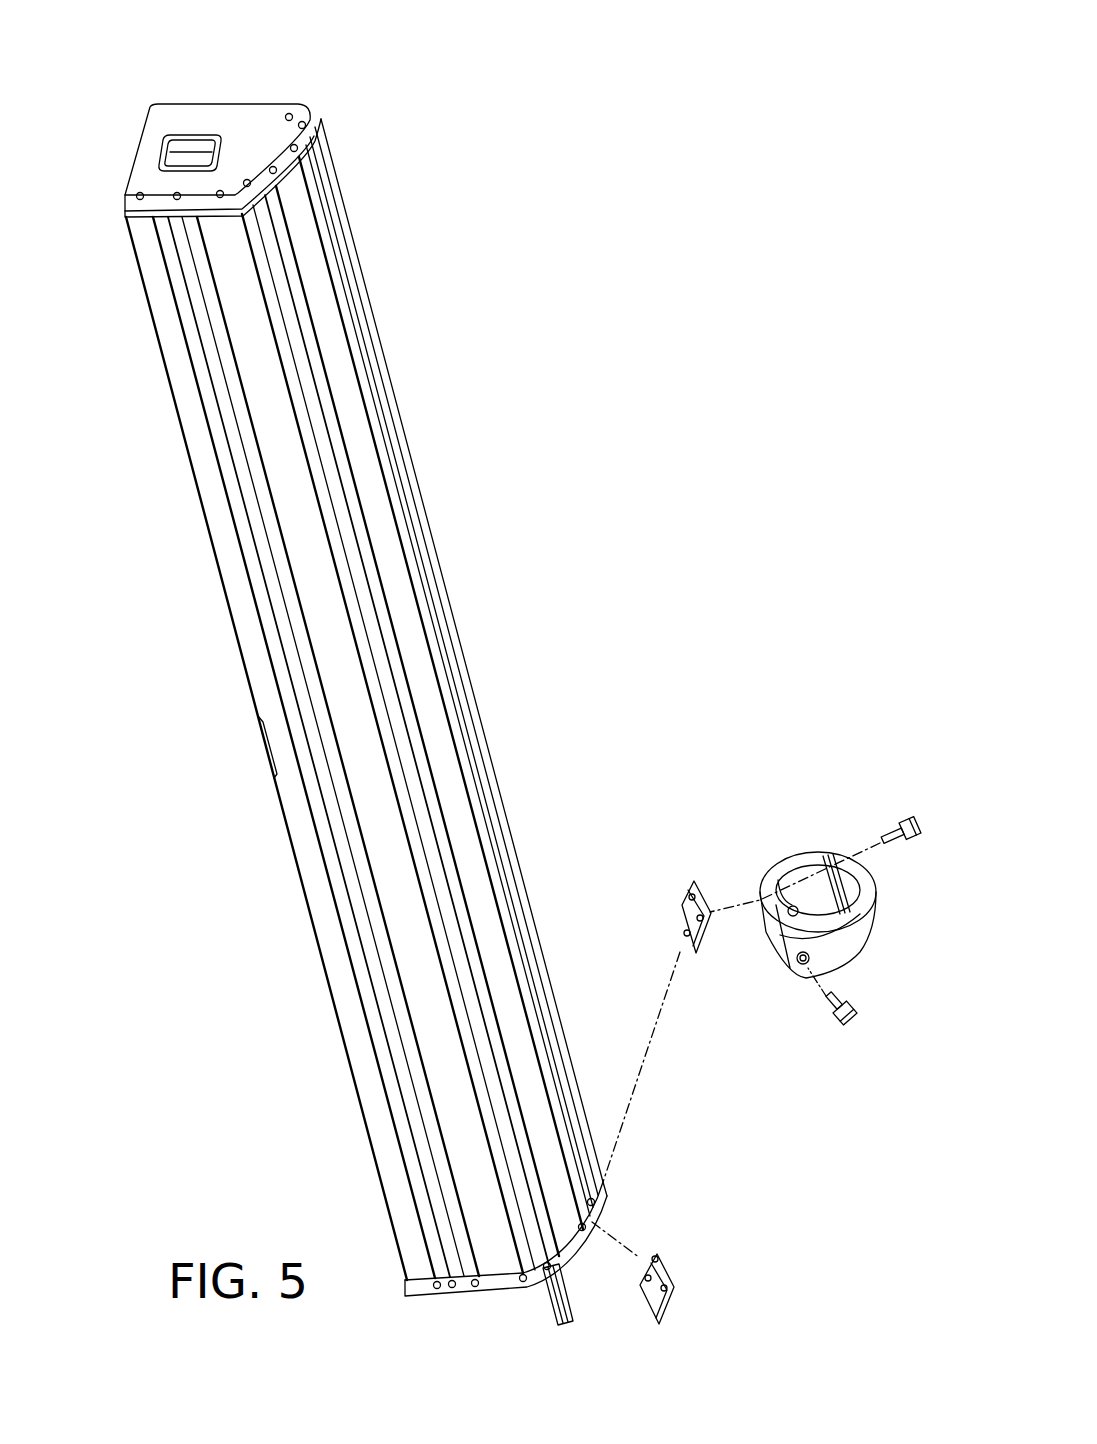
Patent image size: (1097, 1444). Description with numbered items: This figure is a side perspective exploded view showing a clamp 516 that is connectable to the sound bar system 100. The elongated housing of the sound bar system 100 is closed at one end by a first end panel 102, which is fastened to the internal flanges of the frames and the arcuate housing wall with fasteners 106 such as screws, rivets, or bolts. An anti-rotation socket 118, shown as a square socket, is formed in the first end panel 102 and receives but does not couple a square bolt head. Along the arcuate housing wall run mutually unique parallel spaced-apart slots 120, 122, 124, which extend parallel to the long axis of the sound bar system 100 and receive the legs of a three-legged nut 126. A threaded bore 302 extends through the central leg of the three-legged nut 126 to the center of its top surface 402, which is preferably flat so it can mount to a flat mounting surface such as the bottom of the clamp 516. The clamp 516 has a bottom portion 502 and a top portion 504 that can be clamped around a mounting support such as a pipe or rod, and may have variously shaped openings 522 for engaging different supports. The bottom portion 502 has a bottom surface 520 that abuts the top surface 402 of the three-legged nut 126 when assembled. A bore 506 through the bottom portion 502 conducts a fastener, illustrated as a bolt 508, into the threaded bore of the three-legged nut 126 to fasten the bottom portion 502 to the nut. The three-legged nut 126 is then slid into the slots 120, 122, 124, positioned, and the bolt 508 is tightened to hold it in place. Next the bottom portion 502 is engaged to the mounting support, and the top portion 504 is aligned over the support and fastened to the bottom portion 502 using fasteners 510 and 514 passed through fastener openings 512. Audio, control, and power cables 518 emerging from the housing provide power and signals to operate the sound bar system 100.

The sound bar system 100 is at (138, 38).
The first end panel 102 is at (270, 112).
The fasteners 106 is at (177, 112).
The anti-rotation socket 118 is at (183, 152).
The slot 120 is at (250, 180).
The slot 122 is at (303, 297).
The slot 124 is at (248, 247).
The three-legged nut 126 is at (693, 885).
The threaded bore 302 is at (692, 940).
The top surface 402 is at (672, 912).
The bottom portion 502 is at (775, 918).
The top portion 504 is at (863, 928).
The bore 506 is at (782, 890).
The bolt 508 is at (796, 904).
The fastener 510 is at (893, 828).
The fastener openings 512 is at (802, 970).
The fastener 514 is at (840, 1025).
The clamp 516 is at (737, 640).
The audio, control, and power cables 518 is at (545, 1300).
The bottom surface 520 is at (748, 893).
The opening 522 is at (806, 880).